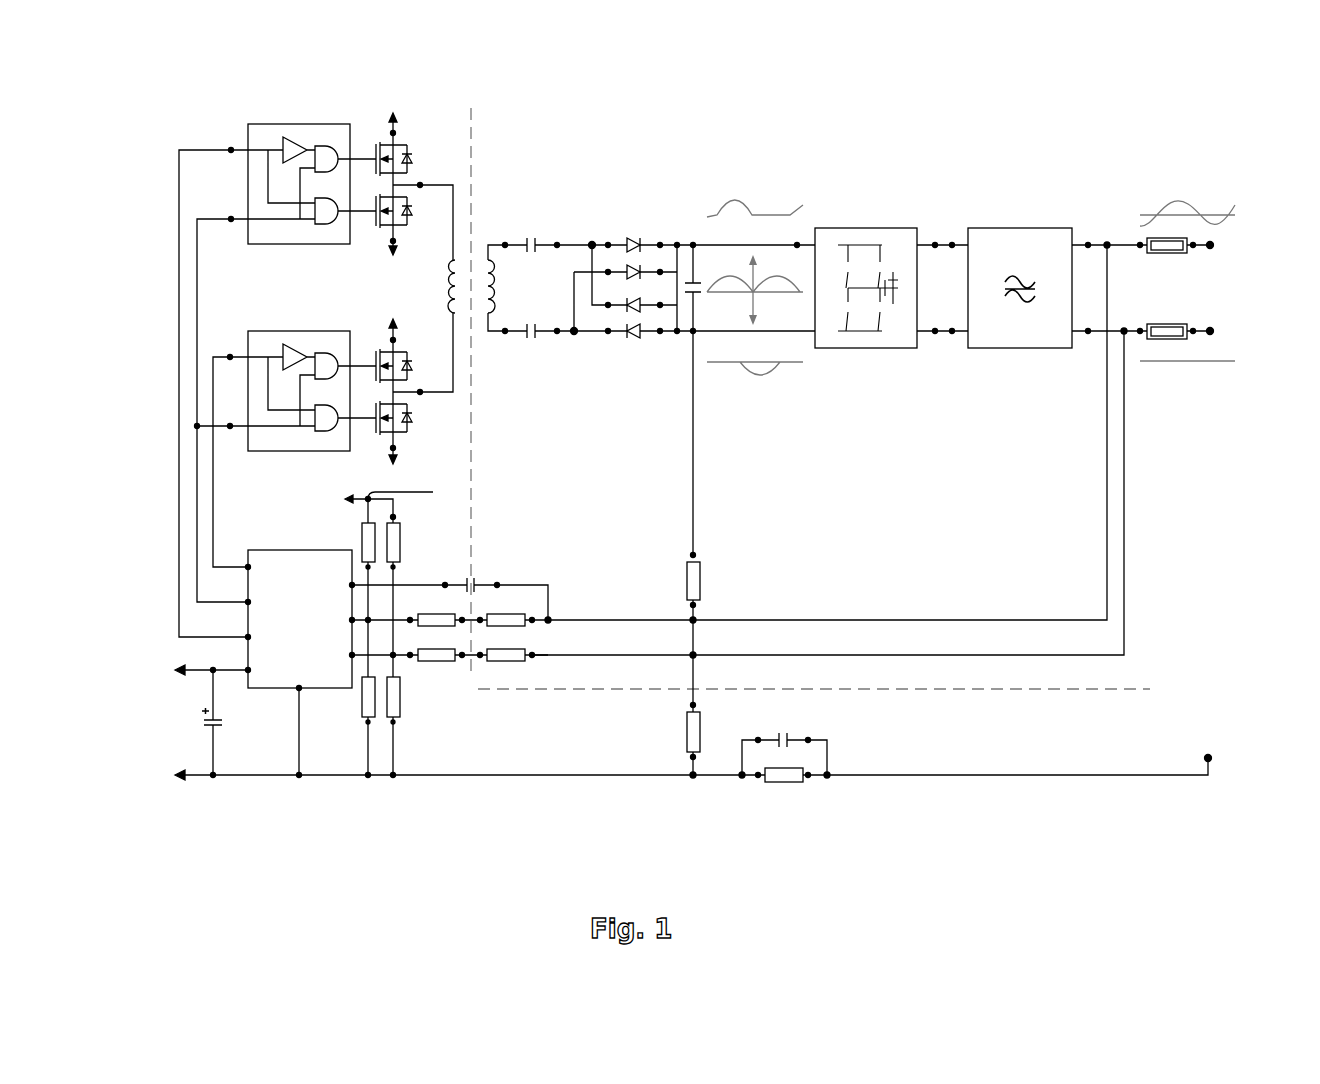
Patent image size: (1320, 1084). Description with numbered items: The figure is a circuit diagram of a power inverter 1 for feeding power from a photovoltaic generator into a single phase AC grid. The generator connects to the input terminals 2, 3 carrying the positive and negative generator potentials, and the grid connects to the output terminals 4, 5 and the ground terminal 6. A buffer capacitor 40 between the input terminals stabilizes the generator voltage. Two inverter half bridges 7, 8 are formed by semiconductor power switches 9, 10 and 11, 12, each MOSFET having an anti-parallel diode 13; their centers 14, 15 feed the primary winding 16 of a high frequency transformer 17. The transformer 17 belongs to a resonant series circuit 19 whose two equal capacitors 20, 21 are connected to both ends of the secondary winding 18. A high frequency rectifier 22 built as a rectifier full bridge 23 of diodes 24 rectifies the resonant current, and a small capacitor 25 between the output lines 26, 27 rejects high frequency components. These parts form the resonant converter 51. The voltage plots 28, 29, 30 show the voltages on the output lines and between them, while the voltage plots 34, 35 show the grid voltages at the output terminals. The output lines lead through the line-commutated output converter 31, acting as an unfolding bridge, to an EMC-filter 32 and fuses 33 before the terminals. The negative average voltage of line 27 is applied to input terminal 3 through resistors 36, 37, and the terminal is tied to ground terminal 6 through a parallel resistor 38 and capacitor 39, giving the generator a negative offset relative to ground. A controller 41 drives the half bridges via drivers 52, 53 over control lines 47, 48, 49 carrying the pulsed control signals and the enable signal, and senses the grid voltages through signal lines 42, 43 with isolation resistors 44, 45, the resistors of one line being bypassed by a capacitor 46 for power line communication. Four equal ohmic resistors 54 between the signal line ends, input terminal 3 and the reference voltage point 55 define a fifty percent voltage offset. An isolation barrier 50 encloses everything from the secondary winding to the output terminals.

The power inverter 1 is at (1013, 155).
The input terminal 2 is at (197, 672).
The input terminal 3 is at (197, 778).
The output terminal 4 is at (1213, 244).
The output terminal 5 is at (1213, 331).
The ground terminal 6 is at (1211, 756).
The inverter half bridge 7 is at (433, 262).
The inverter half bridge 8 is at (378, 393).
The semiconductor power switch 9 is at (436, 262).
The semiconductor power switch 10 is at (378, 231).
The semiconductor power switch 11 is at (375, 345).
The semiconductor power switch 12 is at (377, 441).
The anti-parallel diode 13 is at (412, 159).
The center 14 is at (398, 182).
The center 15 is at (377, 395).
The primary winding 16 is at (447, 287).
The high frequency transformer 17 is at (479, 237).
The secondary winding 18 is at (494, 283).
The resonant series circuit 19 is at (532, 210).
The capacitor 20 is at (538, 243).
The capacitor 21 is at (557, 340).
The high frequency rectifier 22 is at (694, 265).
The rectifier full bridge 23 is at (635, 351).
The diode 24 is at (664, 262).
The capacitor 25 is at (690, 300).
The output line 26 is at (725, 246).
The output line 27 is at (727, 333).
The V(t) plot 28 is at (755, 200).
The V(t) plot 29 is at (752, 370).
The V(t) plot 30 is at (764, 299).
The output converter 31 is at (882, 219).
The EMC-filter 32 is at (1037, 225).
The fuse 33 is at (1178, 324).
The V(t) plot 34 is at (1214, 210).
The V(t) plot 35 is at (1215, 367).
The resistor 36 is at (702, 567).
The resistor 37 is at (686, 732).
The resistor 38 is at (800, 783).
The capacitor 39 is at (790, 742).
The capacitor 40 is at (205, 722).
The controller 41 is at (248, 585).
The signal line 42 is at (888, 620).
The signal line 43 is at (910, 655).
The isolation resistor 44 is at (524, 612).
The isolation resistor 45 is at (412, 620).
The capacitor 46 is at (472, 577).
The control line 47 is at (213, 452).
The control line 48 is at (196, 296).
The control line 49 is at (178, 247).
The isolation barrier 50 is at (1140, 690).
The resonant converter 51 is at (531, 157).
The driver 52 is at (265, 128).
The driver 53 is at (248, 376).
The ohmic resistor 54 is at (362, 522).
The reference voltage point 55 is at (418, 494).